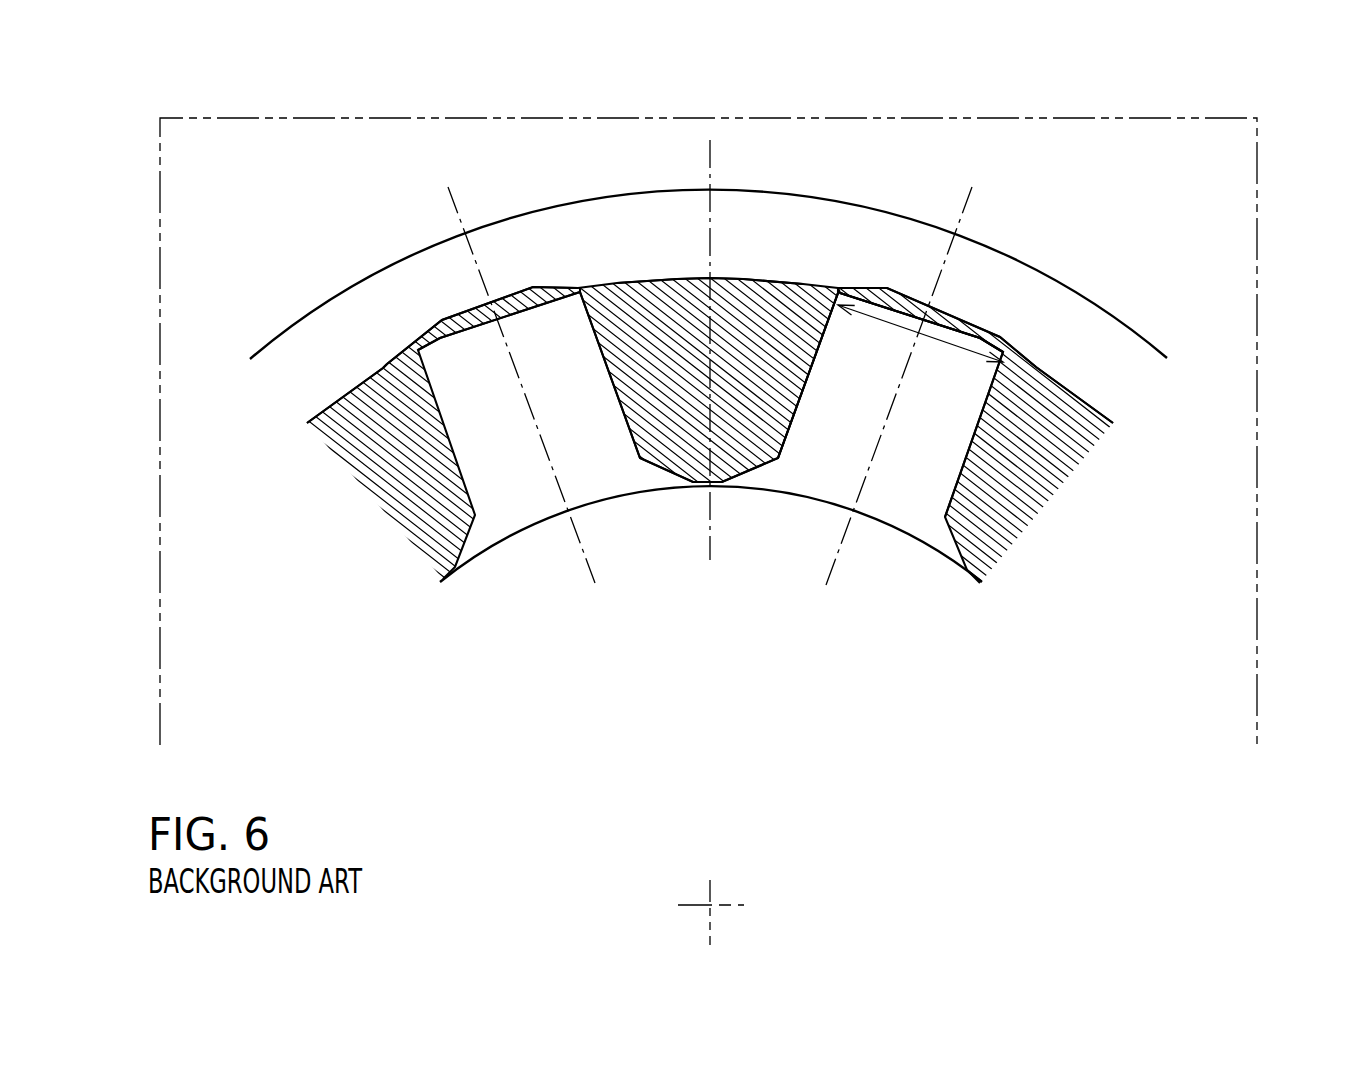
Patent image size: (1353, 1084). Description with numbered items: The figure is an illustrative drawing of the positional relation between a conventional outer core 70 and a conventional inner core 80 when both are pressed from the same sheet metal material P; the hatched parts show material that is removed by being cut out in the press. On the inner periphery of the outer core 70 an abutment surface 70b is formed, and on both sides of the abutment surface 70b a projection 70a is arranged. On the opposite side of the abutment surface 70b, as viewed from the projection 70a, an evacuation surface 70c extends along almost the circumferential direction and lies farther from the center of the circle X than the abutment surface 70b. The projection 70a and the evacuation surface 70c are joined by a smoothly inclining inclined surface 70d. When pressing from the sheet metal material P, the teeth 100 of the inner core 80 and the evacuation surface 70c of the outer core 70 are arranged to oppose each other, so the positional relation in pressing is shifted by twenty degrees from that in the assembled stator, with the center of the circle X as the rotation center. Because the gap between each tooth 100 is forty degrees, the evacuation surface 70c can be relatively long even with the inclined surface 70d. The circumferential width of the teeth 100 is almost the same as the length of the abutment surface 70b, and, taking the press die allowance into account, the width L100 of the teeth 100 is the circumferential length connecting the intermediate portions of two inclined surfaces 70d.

The outer core 70 is at (913, 238).
The projection 70a is at (807, 287).
The abutment surface 70b is at (673, 277).
The evacuation surface 70c is at (928, 307).
The inclined surface 70d is at (865, 285).
The inner core 80 is at (900, 512).
The teeth 100 is at (837, 415).
The width of the teeth in the circumferential direction L100 is at (937, 338).
The sheet metal material P is at (1220, 182).
The center of the circle X is at (710, 905).